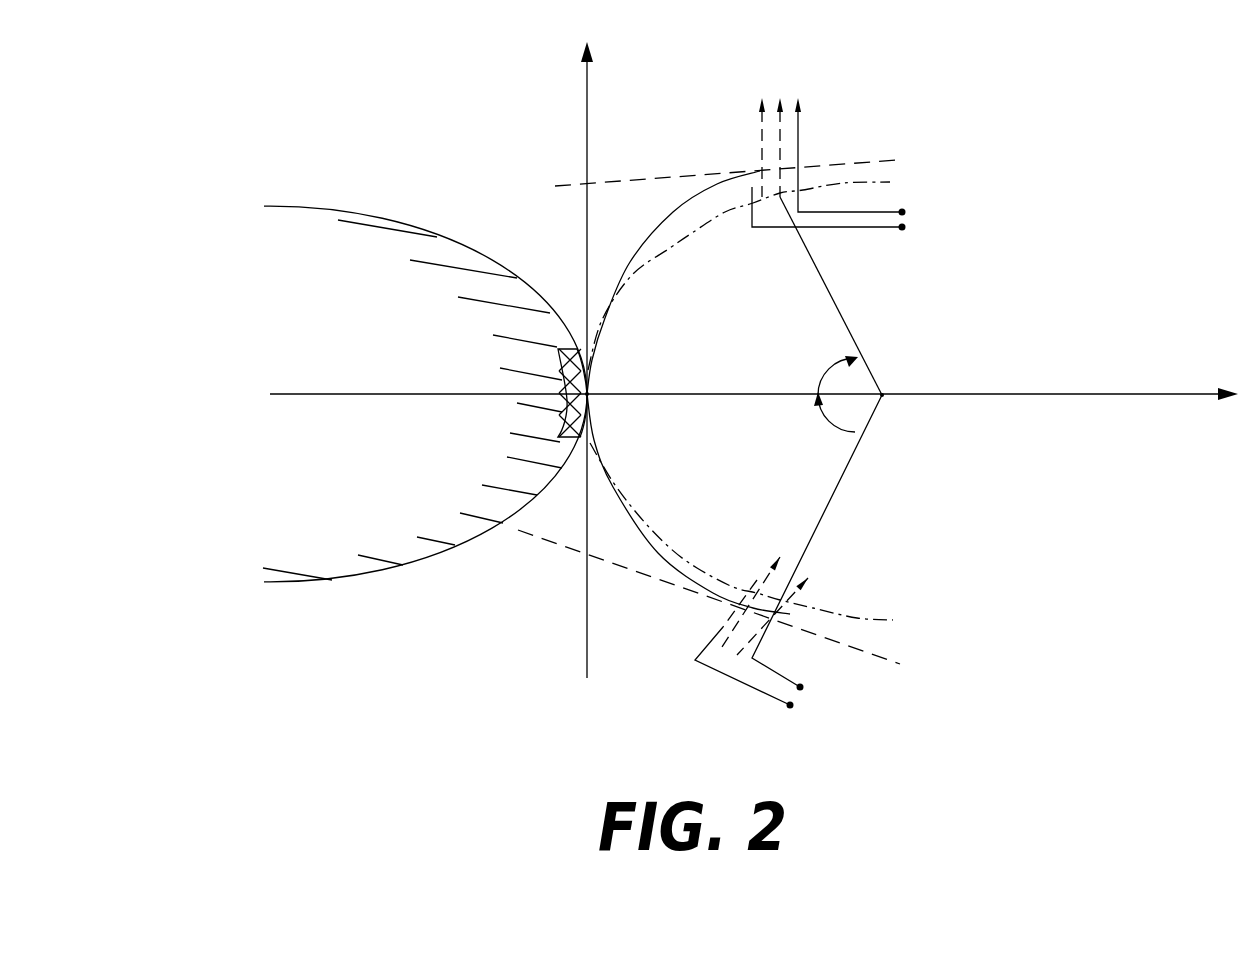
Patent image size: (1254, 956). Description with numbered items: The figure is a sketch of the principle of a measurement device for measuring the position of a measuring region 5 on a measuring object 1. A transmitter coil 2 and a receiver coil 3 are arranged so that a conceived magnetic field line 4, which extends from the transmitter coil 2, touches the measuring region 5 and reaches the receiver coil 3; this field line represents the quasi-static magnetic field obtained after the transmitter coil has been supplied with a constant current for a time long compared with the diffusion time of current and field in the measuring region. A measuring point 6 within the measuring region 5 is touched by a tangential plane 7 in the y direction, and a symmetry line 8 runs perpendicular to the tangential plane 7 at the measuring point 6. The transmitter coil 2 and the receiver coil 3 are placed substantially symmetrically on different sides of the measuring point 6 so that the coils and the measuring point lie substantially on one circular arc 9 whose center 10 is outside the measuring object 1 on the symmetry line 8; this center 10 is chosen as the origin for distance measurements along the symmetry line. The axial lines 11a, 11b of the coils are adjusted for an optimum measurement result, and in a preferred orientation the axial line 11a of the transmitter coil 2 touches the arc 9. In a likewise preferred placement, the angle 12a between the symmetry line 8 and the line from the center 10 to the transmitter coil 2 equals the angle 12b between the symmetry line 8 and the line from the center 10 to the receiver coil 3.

The measuring object 1 is at (311, 219).
The transmitter coil 2 is at (794, 573).
The receiver coil 3 is at (784, 98).
The magnetic field line 4 is at (637, 521).
The measuring region 5 is at (566, 381).
The measuring point 6 is at (589, 393).
The tangential plane 7 is at (587, 114).
The symmetry line 8 is at (1062, 395).
The circular arc 9 is at (684, 574).
The center 10 is at (883, 397).
The axial line 11a is at (668, 584).
The axial line 11b is at (644, 176).
The angle 12a is at (818, 413).
The angle 12b is at (820, 378).